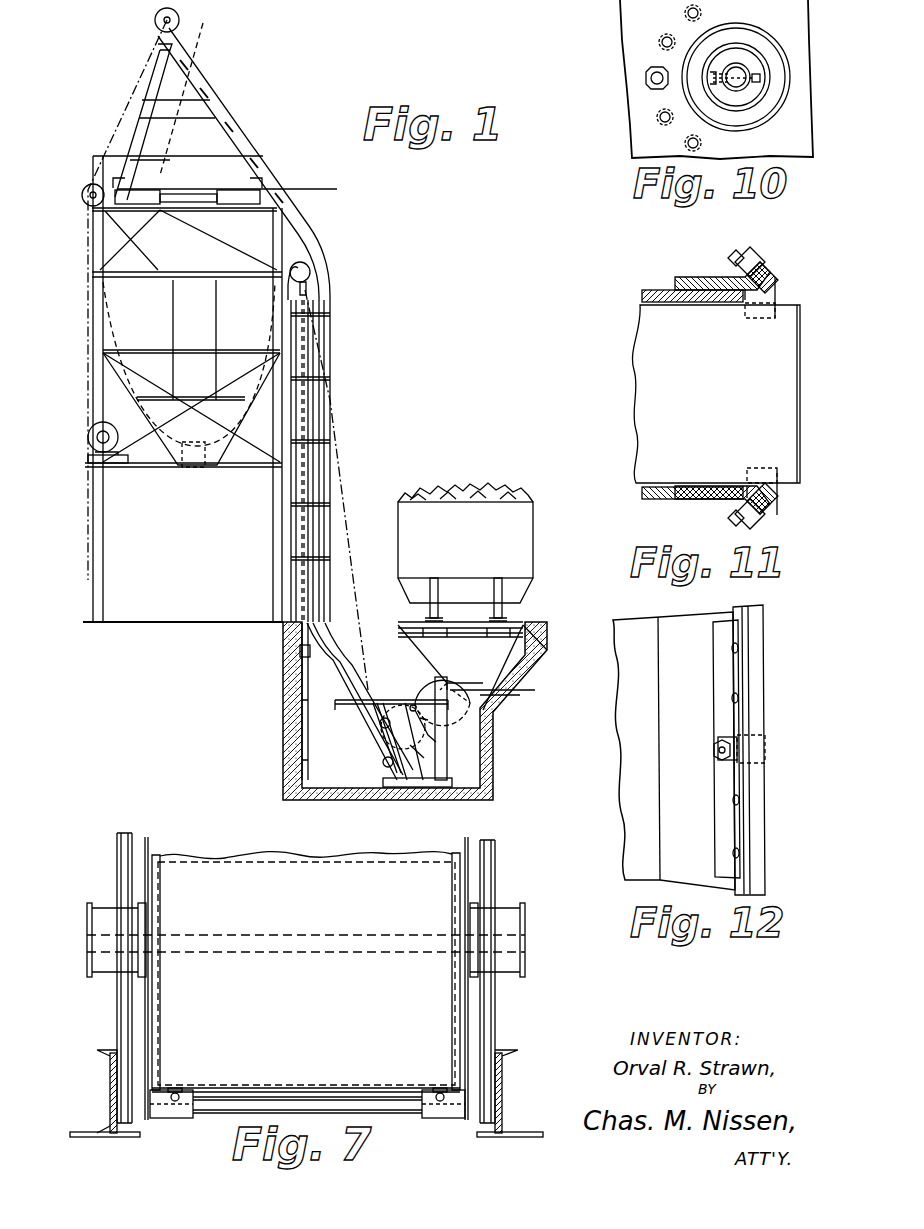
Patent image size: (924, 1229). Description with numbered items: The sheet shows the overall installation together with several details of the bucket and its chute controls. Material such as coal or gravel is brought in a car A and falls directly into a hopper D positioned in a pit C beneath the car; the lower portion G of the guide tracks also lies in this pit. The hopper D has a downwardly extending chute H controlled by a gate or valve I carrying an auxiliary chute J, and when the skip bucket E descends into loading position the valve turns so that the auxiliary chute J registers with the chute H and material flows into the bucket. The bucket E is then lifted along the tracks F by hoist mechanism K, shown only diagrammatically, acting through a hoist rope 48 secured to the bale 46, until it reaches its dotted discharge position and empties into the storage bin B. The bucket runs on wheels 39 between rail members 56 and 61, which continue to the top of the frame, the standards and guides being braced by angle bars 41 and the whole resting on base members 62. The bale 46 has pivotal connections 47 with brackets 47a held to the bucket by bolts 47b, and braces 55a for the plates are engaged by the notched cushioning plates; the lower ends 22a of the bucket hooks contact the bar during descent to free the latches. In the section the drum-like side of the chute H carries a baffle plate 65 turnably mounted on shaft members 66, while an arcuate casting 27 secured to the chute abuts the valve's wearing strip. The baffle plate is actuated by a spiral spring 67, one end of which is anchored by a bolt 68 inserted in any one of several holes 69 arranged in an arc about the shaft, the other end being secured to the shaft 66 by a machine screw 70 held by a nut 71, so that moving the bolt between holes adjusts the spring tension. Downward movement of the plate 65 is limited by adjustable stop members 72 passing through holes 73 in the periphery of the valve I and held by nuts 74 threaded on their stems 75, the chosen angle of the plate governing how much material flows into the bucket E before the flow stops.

In FIG. 1, the track or guide member 61 is at (207, 98).
In FIG. 1, the skip bucket E is at (225, 180).
In FIG. 7, the skip bucket E is at (306, 972).
In FIG. 1, the storage bin B is at (247, 327).
In FIG. 1, the tracks F is at (305, 405).
In FIG. 1, the guide 56 is at (325, 468).
In FIG. 1, the hoist mechanism K is at (88, 435).
In FIG. 1, the hoist rope 48 is at (350, 560).
In FIG. 1, the car A is at (518, 533).
In FIG. 1, the base member 62 is at (452, 795).
In FIG. 7, the base member 62 is at (110, 1087).
In FIG. 1, the lower portion of guide tracks G is at (298, 668).
In FIG. 1, the hopper D is at (483, 658).
In FIG. 1, the pit C is at (503, 700).
In FIG. 1, the gate or valve I is at (425, 692).
In FIG. 1, the chute H is at (467, 690).
In FIG. 10, the chute H is at (627, 42).
In FIG. 11, the chute H is at (645, 295).
In FIG. 12, the chute H is at (625, 630).
In FIG. 1, the angle bar 41 is at (395, 713).
In FIG. 1, the auxiliary chute J is at (410, 722).
In FIG. 7, the wheel 39 is at (87, 915).
In FIG. 7, the brace 55a is at (117, 993).
In FIG. 7, the bale 46 is at (145, 1010).
In FIG. 7, the lower end of hook 22a is at (160, 965).
In FIG. 7, the pivotal connection 47 is at (225, 1113).
In FIG. 7, the bracket 47a is at (180, 1118).
In FIG. 7, the bolt 47b is at (175, 1100).
In FIG. 10, the hole 69 is at (662, 40).
In FIG. 10, the bolt 68 is at (645, 78).
In FIG. 10, the machine screw 70 is at (712, 72).
In FIG. 10, the shaft member 66 is at (737, 66).
In FIG. 10, the spiral spring 67 is at (767, 37).
In FIG. 10, the nut 71 is at (757, 85).
In FIG. 11, the baffle plate 65 is at (657, 368).
In FIG. 11, the casting 27 is at (690, 282).
In FIG. 11, the adjustable stop member 72 is at (778, 292).
In FIG. 12, the adjustable stop member 72 is at (760, 735).
In FIG. 11, the hole 73 is at (772, 268).
In FIG. 12, the hole 73 is at (742, 698).
In FIG. 11, the nut 74 is at (742, 260).
In FIG. 12, the nut 74 is at (730, 765).
In FIG. 11, the stem 75 is at (730, 258).
In FIG. 12, the stem 75 is at (716, 752).